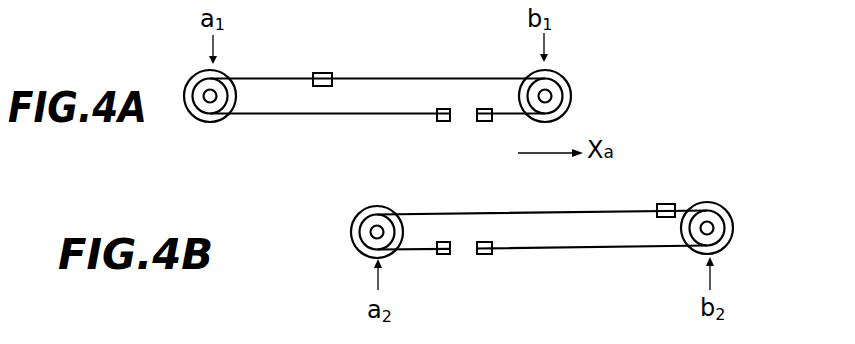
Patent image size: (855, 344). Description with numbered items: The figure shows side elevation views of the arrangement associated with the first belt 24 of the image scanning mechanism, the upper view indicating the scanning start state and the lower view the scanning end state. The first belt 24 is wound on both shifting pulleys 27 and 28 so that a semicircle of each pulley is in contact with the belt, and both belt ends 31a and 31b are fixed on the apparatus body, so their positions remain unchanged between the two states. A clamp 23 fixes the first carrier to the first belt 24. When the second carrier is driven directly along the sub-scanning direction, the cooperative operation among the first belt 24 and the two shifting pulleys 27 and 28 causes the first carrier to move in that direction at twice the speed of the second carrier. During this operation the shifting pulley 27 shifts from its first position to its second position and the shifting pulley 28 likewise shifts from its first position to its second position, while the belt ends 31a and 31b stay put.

In FIG. 4A, the clamp 23 is at (320, 72).
In FIG. 4B, the clamp 23 is at (666, 200).
In FIG. 4A, the first belt 24 is at (417, 78).
In FIG. 4B, the first belt 24 is at (620, 249).
In FIG. 4A, the shifting pulley 27 is at (196, 74).
In FIG. 4B, the shifting pulley 27 is at (358, 231).
In FIG. 4A, the shifting pulley 28 is at (561, 77).
In FIG. 4B, the shifting pulley 28 is at (718, 222).
In FIG. 4A, the belt end 31a is at (443, 122).
In FIG. 4B, the belt end 31a is at (446, 257).
In FIG. 4A, the belt end 31b is at (481, 122).
In FIG. 4B, the belt end 31b is at (487, 257).